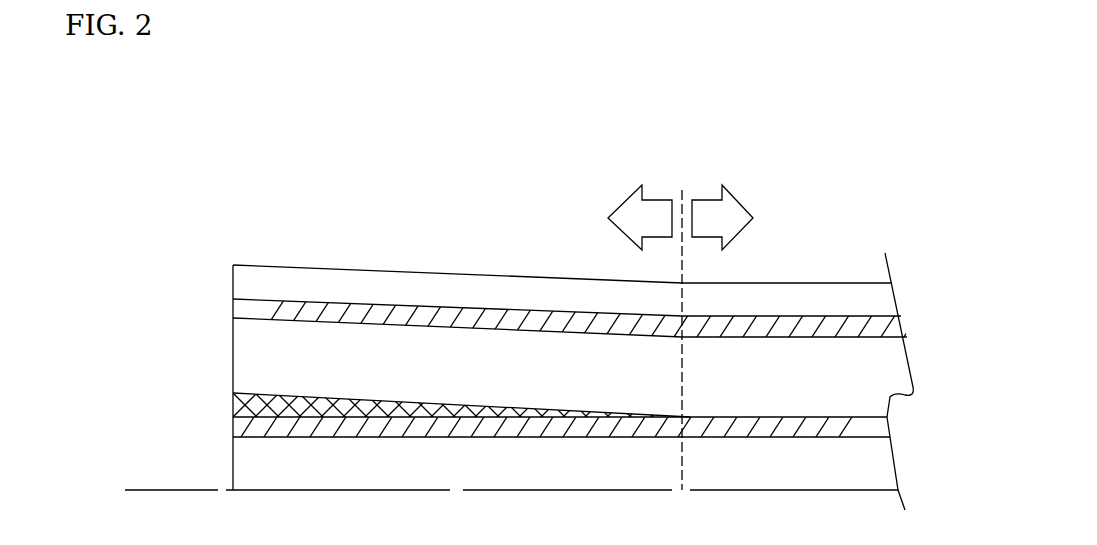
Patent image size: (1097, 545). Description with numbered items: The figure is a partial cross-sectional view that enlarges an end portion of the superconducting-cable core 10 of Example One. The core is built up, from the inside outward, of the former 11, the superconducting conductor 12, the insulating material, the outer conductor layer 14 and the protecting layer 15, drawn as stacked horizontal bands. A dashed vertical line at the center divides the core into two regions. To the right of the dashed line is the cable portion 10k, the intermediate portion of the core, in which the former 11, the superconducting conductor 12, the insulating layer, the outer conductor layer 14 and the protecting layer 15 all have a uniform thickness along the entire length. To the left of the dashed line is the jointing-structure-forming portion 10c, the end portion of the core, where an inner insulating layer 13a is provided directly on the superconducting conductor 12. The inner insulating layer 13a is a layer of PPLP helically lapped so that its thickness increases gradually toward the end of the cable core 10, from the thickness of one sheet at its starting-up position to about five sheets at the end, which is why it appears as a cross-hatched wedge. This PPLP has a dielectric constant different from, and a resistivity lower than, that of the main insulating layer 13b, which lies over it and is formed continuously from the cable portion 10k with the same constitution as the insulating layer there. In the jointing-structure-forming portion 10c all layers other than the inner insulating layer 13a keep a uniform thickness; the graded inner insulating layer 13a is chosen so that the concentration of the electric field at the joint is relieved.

The superconducting-cable core 10 is at (437, 258).
The jointing-structure-forming portion 10c is at (615, 217).
The cable portion 10k is at (756, 217).
The former 11 is at (242, 463).
The superconducting conductor 12 is at (243, 425).
The inner insulating layer 13a is at (237, 403).
The main insulating layer 13b is at (257, 367).
The outer conductor layer 14 is at (245, 303).
The protecting layer 15 is at (243, 276).